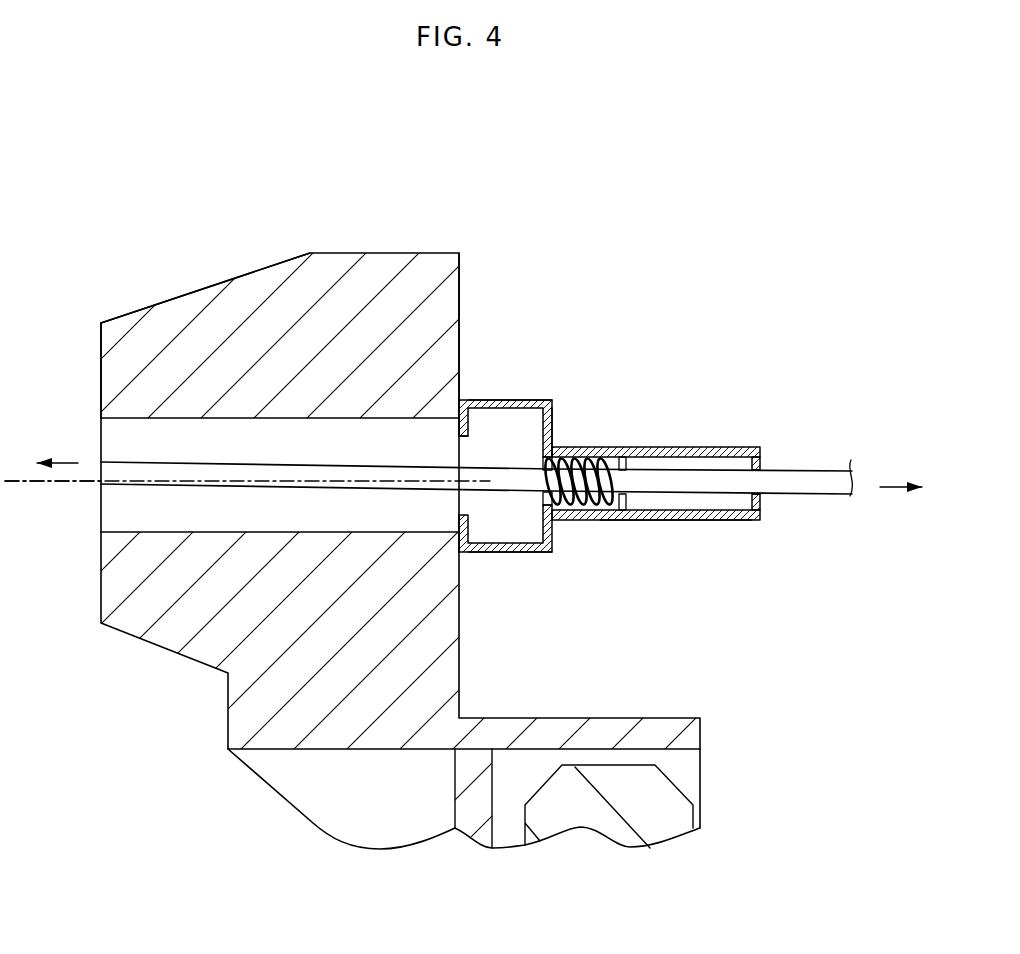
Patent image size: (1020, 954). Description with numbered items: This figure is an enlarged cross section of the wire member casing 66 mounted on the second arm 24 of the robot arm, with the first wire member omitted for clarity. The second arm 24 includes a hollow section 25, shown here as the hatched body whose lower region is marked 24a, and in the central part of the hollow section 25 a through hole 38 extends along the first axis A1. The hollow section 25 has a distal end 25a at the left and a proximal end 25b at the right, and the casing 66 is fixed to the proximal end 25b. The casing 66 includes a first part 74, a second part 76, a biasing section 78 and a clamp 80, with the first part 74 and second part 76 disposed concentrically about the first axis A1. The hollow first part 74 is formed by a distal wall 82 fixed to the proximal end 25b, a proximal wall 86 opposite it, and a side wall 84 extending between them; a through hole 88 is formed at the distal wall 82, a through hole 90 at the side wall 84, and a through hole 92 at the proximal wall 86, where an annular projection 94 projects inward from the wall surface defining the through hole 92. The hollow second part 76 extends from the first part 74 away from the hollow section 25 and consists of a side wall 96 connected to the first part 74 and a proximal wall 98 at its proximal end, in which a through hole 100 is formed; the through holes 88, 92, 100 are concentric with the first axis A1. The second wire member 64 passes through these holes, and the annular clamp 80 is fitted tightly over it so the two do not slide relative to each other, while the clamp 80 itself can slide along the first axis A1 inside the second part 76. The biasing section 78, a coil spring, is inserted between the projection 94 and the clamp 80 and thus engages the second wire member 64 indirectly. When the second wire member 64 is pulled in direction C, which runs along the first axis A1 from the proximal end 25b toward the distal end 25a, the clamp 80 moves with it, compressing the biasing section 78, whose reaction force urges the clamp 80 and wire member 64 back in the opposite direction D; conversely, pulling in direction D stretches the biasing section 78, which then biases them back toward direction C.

The second arm 24 is at (510, 502).
The lower housing portion 24a is at (396, 814).
The hollow section 25 is at (256, 288).
The distal end of the hollow section 25a is at (101, 341).
The proximal end of the hollow section 25b is at (462, 287).
The through hole 38 is at (101, 432).
The second wire member 64 is at (826, 477).
The wire member casing 66 is at (595, 404).
The first part 74 is at (488, 449).
The second part 76 is at (677, 463).
The biasing section 78 is at (605, 458).
The clamp 80 is at (625, 511).
The distal wall 82 is at (458, 425).
The side wall 84 is at (482, 398).
The proximal wall 86 is at (552, 424).
The through hole 88 is at (462, 507).
The through hole 90 is at (522, 553).
The through hole 92 is at (555, 521).
The annular projection 94 is at (541, 463).
The side wall 96 is at (690, 521).
The proximal wall 98 is at (762, 459).
The through hole 100 is at (756, 496).
The direction C is at (70, 463).
The direction D is at (893, 493).
The first axis A1 is at (48, 485).